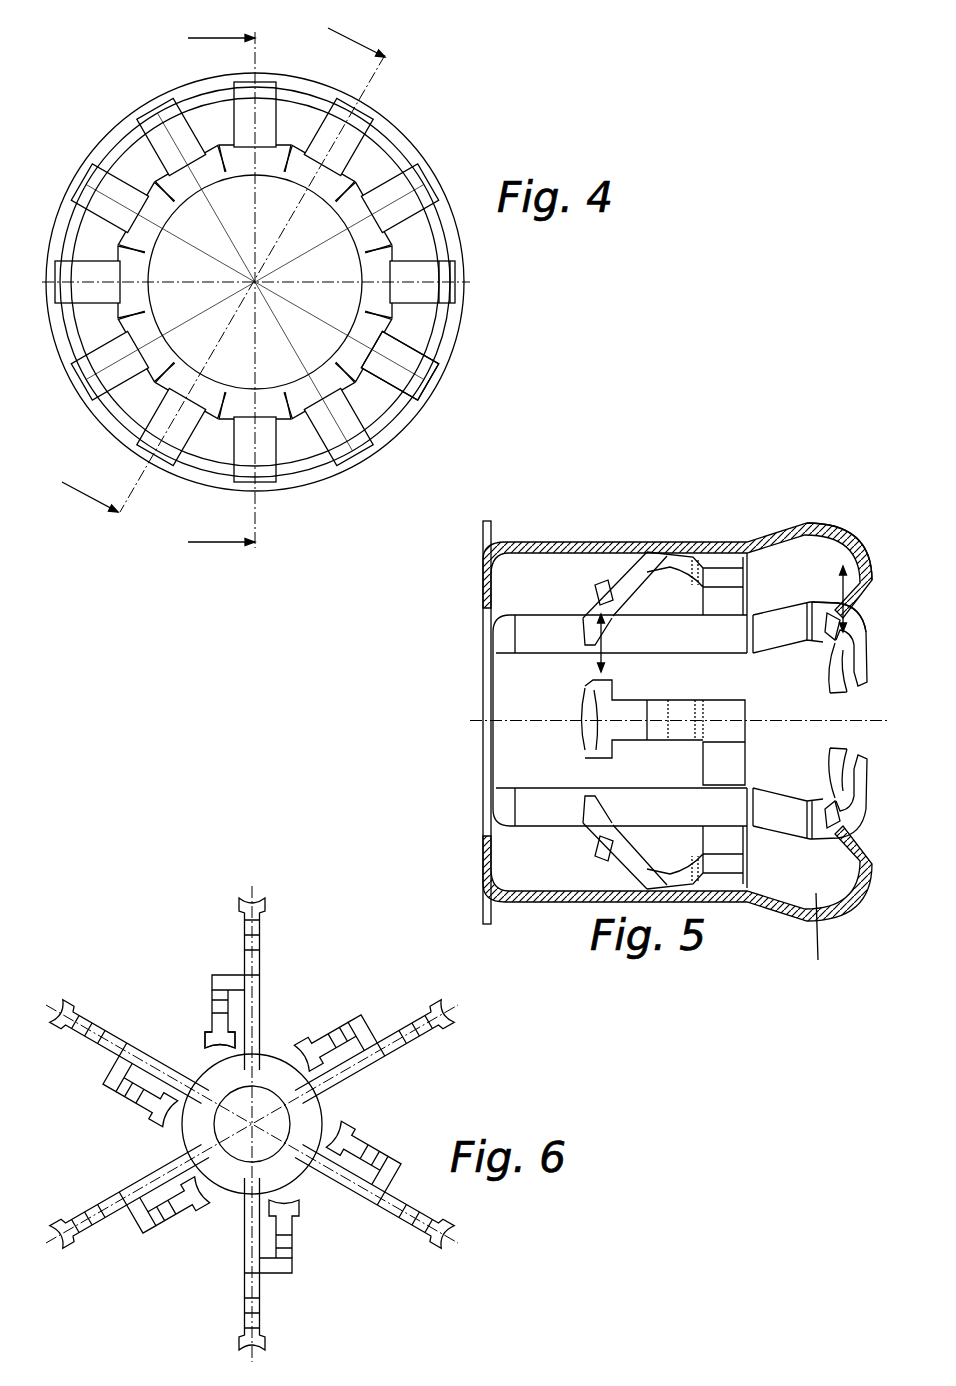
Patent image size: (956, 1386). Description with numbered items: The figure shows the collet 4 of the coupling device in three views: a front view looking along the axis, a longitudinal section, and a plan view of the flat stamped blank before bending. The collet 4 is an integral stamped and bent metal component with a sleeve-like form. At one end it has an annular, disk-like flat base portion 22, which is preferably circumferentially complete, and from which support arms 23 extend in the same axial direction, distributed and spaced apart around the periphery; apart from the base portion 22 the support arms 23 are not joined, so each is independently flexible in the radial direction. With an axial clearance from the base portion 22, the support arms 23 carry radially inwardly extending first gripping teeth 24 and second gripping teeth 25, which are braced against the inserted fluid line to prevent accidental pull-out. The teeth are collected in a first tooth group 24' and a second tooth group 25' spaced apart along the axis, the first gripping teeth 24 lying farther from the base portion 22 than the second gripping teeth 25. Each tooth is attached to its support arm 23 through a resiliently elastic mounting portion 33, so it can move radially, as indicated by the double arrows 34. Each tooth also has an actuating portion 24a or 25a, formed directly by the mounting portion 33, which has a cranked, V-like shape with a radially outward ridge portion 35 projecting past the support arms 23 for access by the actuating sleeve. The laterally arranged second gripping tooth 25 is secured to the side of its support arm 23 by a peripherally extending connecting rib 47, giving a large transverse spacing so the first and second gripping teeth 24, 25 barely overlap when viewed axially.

In FIG. 4, the collet 4 is at (432, 144).
In FIG. 5, the collet 4 is at (466, 690).
In FIG. 6, the collet 4 is at (133, 1162).
In FIG. 4, the base portion 22 is at (447, 340).
In FIG. 5, the base portion 22 is at (482, 590).
In FIG. 6, the base portion 22 is at (322, 1115).
In FIG. 5, the support arms 23 is at (549, 634).
In FIG. 4, the first gripping teeth 24 is at (255, 282).
In FIG. 5, the first gripping teeth 24 is at (807, 720).
In FIG. 6, the first gripping teeth 24 is at (252, 1118).
In FIG. 4, the actuating portion 24a is at (452, 380).
In FIG. 5, the actuating portion 24a is at (817, 522).
In FIG. 5, the first tooth group 24' is at (839, 505).
In FIG. 4, the second gripping teeth 25 is at (255, 282).
In FIG. 5, the second gripping teeth 25 is at (568, 720).
In FIG. 6, the second gripping teeth 25 is at (204, 1015).
In FIG. 4, the actuating portion 25a is at (462, 276).
In FIG. 5, the second tooth group 25' is at (625, 682).
In FIG. 5, the mounting portion 33 is at (660, 554).
In FIG. 6, the mounting portion 33 is at (370, 1068).
In FIG. 5, the double arrows 34 is at (840, 588).
In FIG. 5, the ridge portion 35 is at (818, 941).
In FIG. 4, the connecting rib 47 is at (378, 143).
In FIG. 6, the connecting rib 47 is at (238, 982).